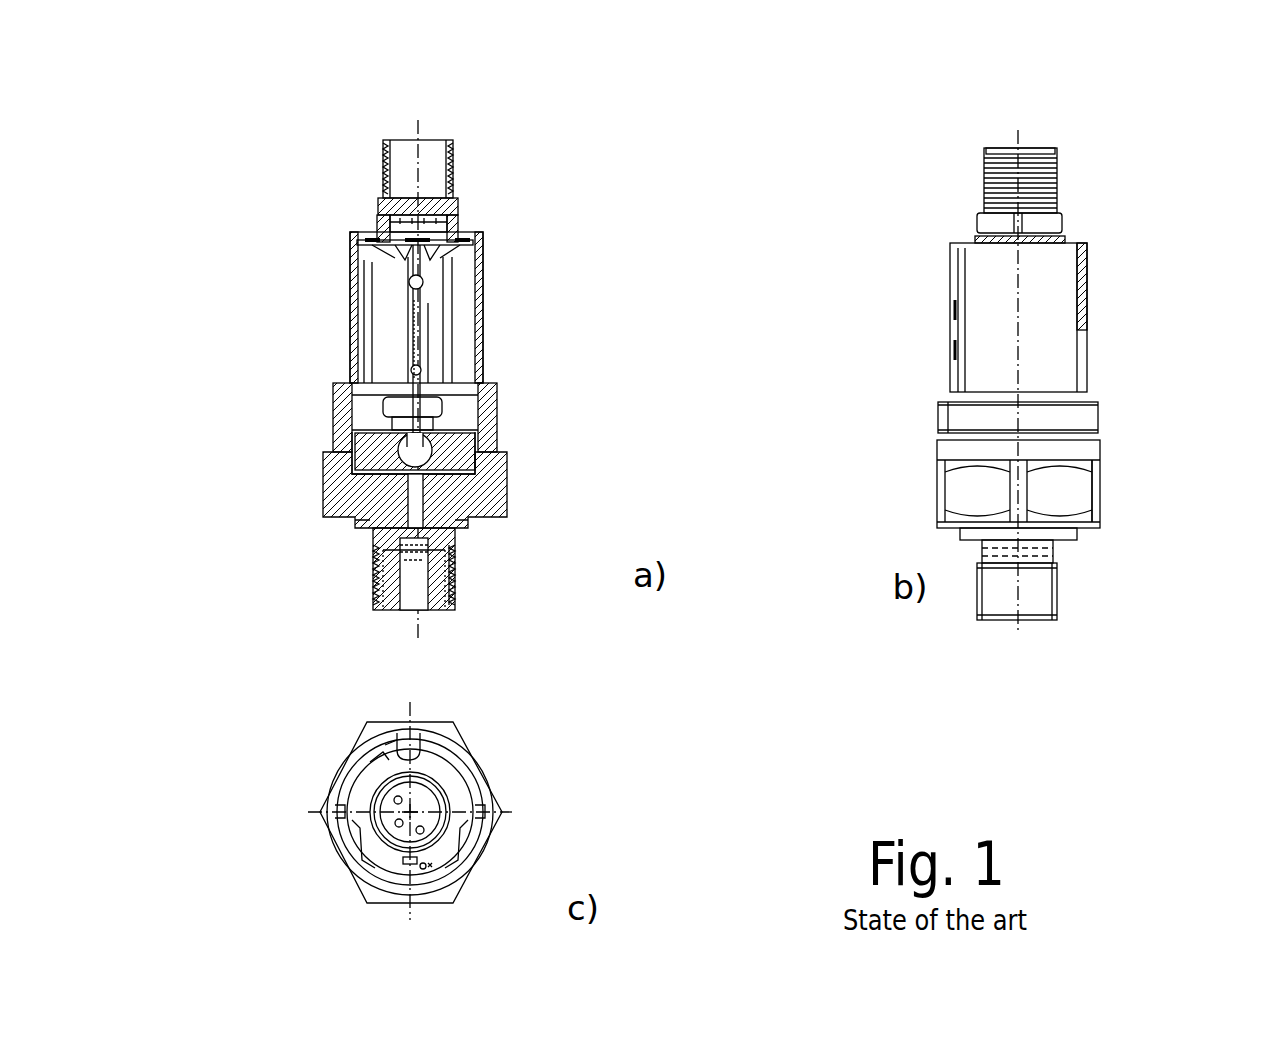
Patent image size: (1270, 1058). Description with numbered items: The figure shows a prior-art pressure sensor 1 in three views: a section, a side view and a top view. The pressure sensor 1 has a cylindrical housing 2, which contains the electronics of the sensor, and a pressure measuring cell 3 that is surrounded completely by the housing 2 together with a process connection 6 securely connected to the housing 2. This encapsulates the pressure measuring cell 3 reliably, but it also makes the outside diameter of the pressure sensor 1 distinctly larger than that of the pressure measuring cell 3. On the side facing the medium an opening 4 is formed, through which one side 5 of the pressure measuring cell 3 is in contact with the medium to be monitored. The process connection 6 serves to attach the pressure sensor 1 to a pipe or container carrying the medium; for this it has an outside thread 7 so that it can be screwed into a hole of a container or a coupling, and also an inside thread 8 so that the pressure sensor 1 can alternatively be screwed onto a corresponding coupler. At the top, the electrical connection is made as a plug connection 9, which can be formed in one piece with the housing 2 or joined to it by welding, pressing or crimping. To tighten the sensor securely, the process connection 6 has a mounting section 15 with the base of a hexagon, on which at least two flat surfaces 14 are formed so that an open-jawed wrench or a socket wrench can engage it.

The pressure sensor 1 is at (293, 225).
The housing 2 is at (347, 335).
The pressure measuring cell 3 is at (358, 450).
The opening 4 is at (385, 550).
The side of the pressure measuring cell 5 is at (478, 447).
The process connection 6 is at (493, 485).
The outside thread 7 is at (457, 580).
The inside thread 8 is at (445, 592).
The plug connection 9 is at (455, 162).
The flat surfaces 14 is at (487, 860).
The mounting section 15 is at (1105, 497).